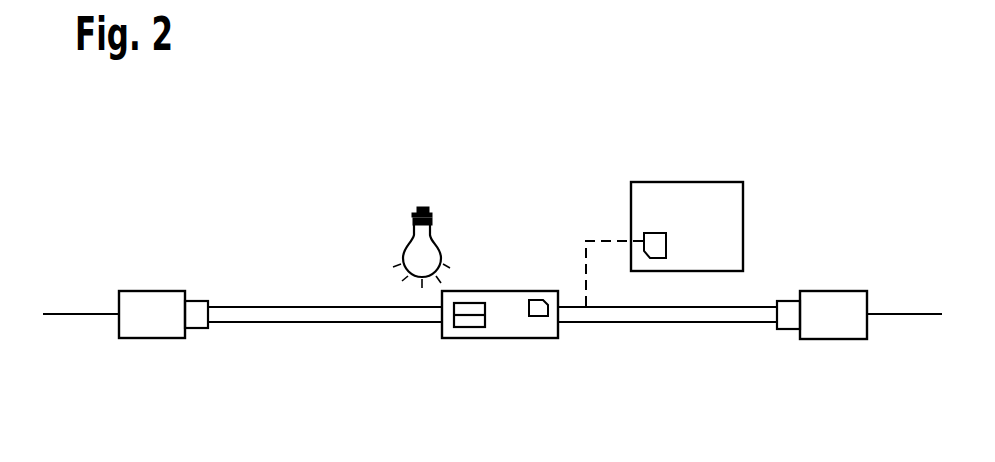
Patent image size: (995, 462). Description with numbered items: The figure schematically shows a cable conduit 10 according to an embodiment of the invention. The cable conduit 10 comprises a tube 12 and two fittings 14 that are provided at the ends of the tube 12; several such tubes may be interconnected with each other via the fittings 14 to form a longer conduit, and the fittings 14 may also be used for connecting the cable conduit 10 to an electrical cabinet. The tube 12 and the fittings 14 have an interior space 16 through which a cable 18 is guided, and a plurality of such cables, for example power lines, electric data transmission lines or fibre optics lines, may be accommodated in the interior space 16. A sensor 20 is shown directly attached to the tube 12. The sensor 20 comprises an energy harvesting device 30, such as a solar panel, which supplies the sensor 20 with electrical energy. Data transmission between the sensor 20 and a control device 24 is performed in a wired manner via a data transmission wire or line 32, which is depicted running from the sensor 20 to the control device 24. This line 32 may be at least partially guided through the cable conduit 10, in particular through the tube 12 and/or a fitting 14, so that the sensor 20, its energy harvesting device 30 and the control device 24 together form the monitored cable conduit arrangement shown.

The cable conduit 10 is at (140, 192).
The tube 12 is at (242, 322).
The fitting 14 is at (153, 339).
The interior space 16 is at (265, 315).
The cable 18 is at (79, 314).
The sensor 20 is at (497, 339).
The control device 24 is at (743, 226).
The energy harvesting device 30 is at (470, 302).
The line 32 is at (608, 240).